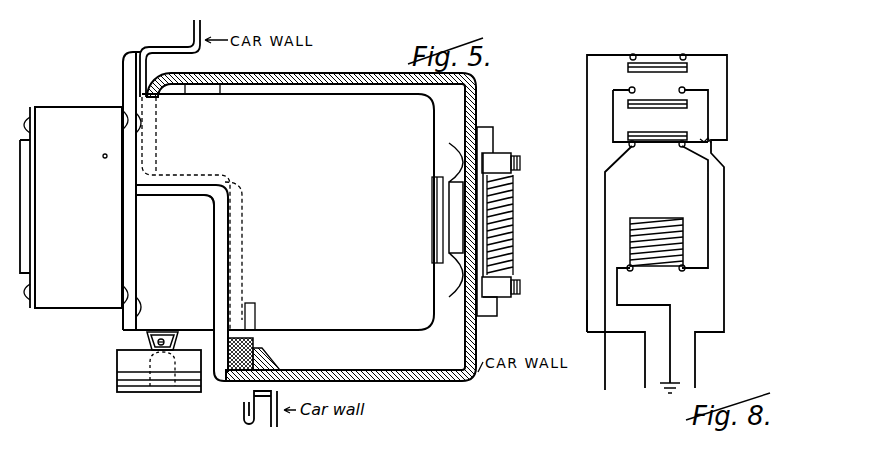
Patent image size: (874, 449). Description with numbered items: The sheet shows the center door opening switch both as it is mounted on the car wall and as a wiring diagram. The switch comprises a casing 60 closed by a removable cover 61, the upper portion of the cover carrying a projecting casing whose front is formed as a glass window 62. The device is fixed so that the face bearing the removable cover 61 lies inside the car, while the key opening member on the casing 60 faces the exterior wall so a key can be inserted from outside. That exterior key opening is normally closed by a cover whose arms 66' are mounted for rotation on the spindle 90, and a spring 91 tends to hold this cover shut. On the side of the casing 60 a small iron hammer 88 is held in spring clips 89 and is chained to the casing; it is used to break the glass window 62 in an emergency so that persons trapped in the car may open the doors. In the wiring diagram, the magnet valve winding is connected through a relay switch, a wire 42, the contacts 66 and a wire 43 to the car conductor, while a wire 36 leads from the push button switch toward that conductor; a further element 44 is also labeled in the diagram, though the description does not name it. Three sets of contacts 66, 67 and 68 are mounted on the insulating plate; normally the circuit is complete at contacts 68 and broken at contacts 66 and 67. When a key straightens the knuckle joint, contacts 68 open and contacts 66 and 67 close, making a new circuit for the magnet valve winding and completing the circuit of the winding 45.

In FIG. 8, the wire 36 is at (603, 200).
In FIG. 8, the wire 42 is at (731, 224).
In FIG. 8, the wire 43 is at (581, 318).
In FIG. 8, the contact lever 44 is at (708, 187).
In FIG. 8, the winding 45 is at (667, 213).
In FIG. 5, the casing 60 is at (175, 262).
In FIG. 5, the removable cover 61 is at (130, 273).
In FIG. 5, the glass window 62 is at (24, 207).
In FIG. 8, the contacts 66 is at (658, 45).
In FIG. 5, the arms 66' is at (526, 225).
In FIG. 8, the contacts 67 is at (684, 88).
In FIG. 8, the contacts 68 is at (680, 147).
In FIG. 5, the iron hammer 88 is at (131, 369).
In FIG. 5, the spring clips 89 is at (146, 337).
In FIG. 5, the spindle 90 is at (512, 212).
In FIG. 5, the spring 91 is at (490, 247).